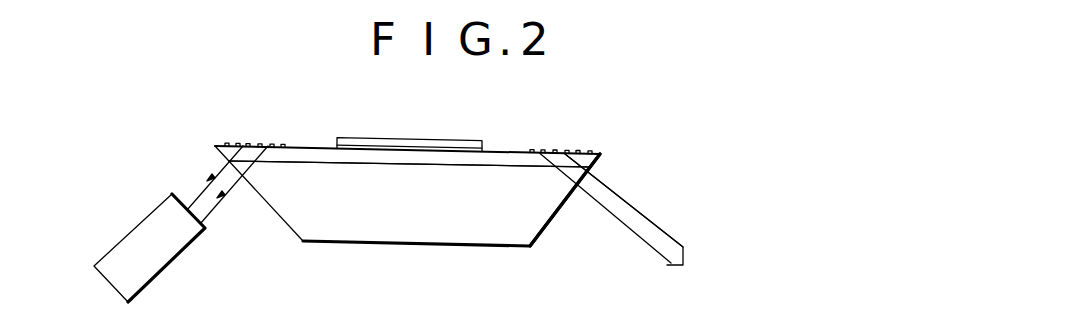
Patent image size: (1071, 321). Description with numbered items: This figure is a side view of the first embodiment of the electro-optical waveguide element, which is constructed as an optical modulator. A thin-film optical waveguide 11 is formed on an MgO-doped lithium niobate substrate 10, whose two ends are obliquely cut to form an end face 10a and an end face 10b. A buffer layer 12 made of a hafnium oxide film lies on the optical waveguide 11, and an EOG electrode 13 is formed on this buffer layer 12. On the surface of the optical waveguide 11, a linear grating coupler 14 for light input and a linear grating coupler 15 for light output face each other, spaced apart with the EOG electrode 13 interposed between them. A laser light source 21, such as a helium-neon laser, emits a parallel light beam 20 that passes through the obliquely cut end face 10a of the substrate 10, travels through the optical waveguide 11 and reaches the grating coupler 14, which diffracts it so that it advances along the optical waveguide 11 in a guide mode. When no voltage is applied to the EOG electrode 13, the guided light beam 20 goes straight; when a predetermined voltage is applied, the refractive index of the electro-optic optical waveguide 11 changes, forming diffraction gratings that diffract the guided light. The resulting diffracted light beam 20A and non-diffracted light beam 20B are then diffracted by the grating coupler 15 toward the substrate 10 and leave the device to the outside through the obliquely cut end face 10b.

The substrate 10 is at (455, 228).
The obliquely cut end face 10a is at (267, 204).
The obliquely cut end face 10b is at (544, 228).
The thin-film optical waveguide 11 is at (506, 159).
The buffer layer 12 is at (407, 150).
The EOG electrode 13 is at (437, 140).
The linear grating coupler for light input 14 is at (263, 143).
The linear grating coupler for light output 15 is at (578, 153).
The light beam 20 is at (197, 197).
The diffracted light beam 20A is at (637, 210).
The non-diffracted light beam 20B is at (624, 200).
The laser light source 21 is at (143, 217).